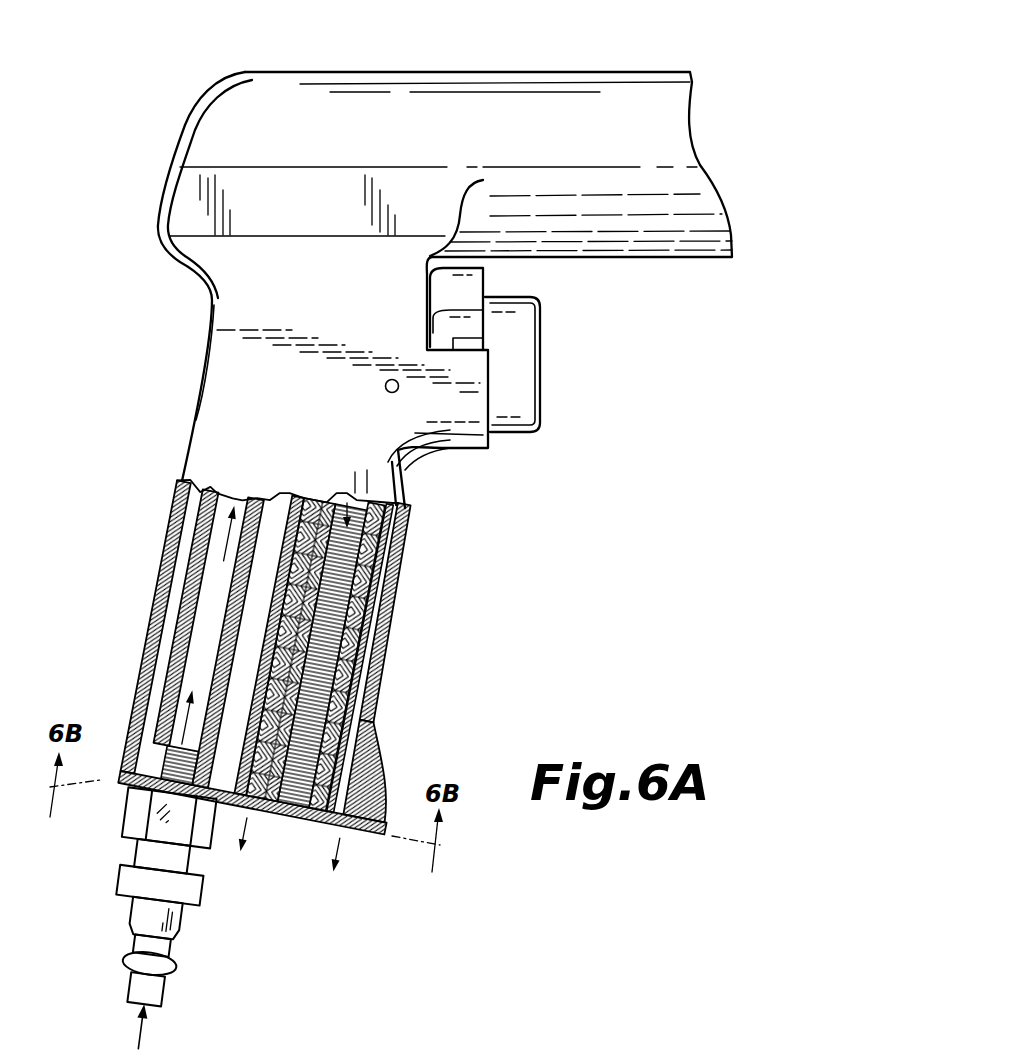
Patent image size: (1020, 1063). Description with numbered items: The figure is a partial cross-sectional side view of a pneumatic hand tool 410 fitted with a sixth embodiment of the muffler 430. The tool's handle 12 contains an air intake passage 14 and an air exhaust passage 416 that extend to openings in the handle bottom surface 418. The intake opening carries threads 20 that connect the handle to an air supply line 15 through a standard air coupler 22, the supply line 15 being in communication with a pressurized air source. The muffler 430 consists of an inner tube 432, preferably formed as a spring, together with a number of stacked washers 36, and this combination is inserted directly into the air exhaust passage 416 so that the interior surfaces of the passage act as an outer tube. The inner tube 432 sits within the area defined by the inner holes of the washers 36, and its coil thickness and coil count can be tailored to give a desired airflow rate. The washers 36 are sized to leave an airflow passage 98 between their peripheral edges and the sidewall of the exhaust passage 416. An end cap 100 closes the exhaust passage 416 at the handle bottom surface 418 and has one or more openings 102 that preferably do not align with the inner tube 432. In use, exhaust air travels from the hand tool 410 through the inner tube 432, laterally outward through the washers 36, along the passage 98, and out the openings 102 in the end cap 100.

The hand tool 410 is at (160, 66).
The muffler 430 is at (470, 531).
The inner tube 432 is at (395, 582).
The air exhaust passage 416 is at (388, 630).
The airflow passage 98 is at (383, 703).
The washers 36 is at (345, 725).
The handle bottom surface 418 is at (385, 785).
The end cap 100 is at (382, 833).
The handle 12 is at (165, 570).
The air intake passage 14 is at (207, 622).
The threads 20 is at (162, 772).
The air coupler 22 is at (130, 910).
The air supply line 15 is at (130, 990).
The openings 102 is at (499, 1060).